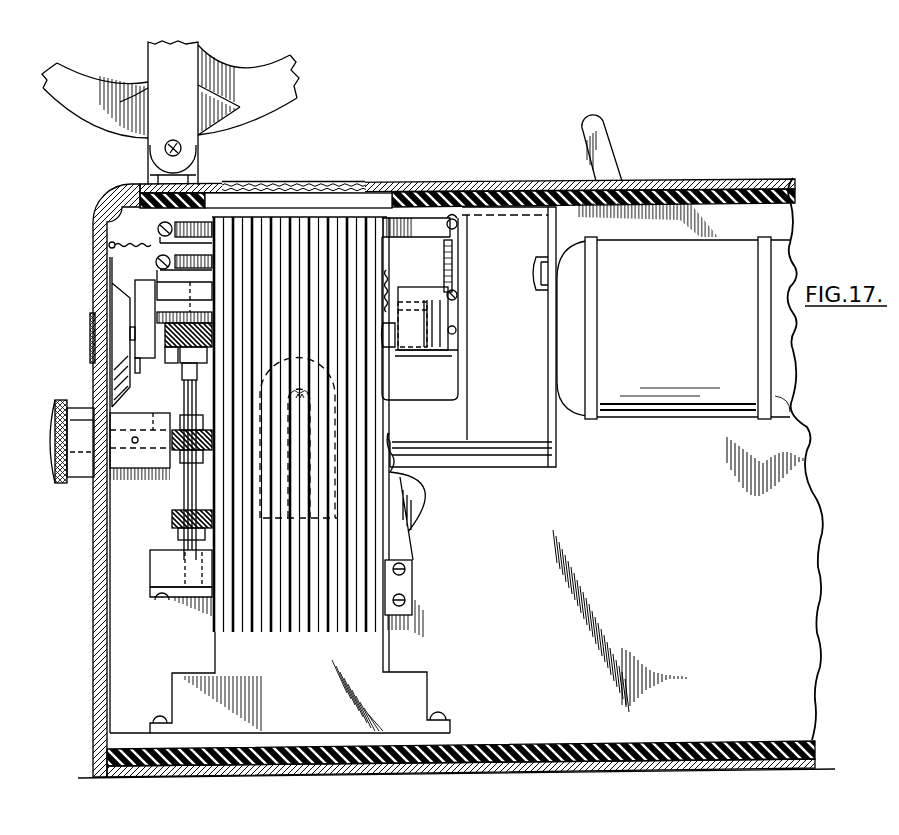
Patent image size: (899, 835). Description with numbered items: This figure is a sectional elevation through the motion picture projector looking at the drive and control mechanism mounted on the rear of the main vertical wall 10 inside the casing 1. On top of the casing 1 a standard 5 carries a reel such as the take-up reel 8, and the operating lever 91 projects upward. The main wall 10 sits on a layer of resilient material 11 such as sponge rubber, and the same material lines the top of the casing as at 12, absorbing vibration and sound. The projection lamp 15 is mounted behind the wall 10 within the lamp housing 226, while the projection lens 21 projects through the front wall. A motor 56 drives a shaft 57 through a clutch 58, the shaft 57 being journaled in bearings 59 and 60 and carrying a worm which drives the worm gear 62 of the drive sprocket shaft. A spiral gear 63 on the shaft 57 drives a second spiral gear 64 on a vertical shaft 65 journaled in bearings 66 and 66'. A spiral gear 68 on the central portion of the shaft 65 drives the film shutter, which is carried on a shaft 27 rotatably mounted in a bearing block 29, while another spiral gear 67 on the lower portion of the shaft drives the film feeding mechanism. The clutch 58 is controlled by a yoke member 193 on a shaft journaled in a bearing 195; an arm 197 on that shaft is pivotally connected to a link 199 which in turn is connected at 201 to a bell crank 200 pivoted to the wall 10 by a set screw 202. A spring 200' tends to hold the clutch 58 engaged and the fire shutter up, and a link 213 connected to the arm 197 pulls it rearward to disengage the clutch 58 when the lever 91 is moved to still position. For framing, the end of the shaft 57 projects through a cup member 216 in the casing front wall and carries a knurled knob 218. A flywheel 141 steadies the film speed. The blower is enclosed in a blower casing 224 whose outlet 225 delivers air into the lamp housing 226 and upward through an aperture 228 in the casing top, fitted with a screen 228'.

The casing 1 is at (92, 282).
The standard 5 is at (157, 146).
The take-up reel 8 is at (283, 100).
The main vertical wall 10 is at (502, 549).
The layer of resilient material 11 is at (532, 763).
The resilient lining 12 is at (735, 179).
The projection lamp 15 is at (337, 413).
The projection lens 21 is at (80, 405).
The shaft 27 is at (155, 413).
The bearing block 29 is at (135, 434).
The motor 56 is at (688, 335).
The shaft 57 is at (139, 372).
The clutch 58 is at (450, 351).
The bearing 59 is at (153, 319).
The bearing 60 is at (420, 343).
The worm gear 62 is at (388, 281).
The spiral gear 63 is at (172, 362).
The spiral gear 64 is at (187, 372).
The vertical shaft 65 is at (186, 485).
The bearing 66 is at (184, 329).
The bearing 66' is at (181, 575).
The spiral gear 67 is at (172, 519).
The spiral gear 68 is at (179, 442).
The operating lever 91 is at (609, 134).
The flywheel 141 is at (430, 497).
The yoke member 193 is at (456, 329).
The bearing 195 is at (440, 297).
The arm 197 is at (450, 250).
The link 199 is at (197, 232).
The bell crank 200 is at (167, 259).
The spring 200' is at (131, 236).
The pivot connection 201 is at (158, 228).
The set screw 202 is at (184, 297).
The link 213 is at (454, 219).
The cup member 216 is at (116, 297).
The knurled knob 218 is at (90, 340).
The blower casing 224 is at (524, 390).
The outlet 225 is at (440, 409).
The projection lamp housing 226 is at (373, 657).
The aperture 228 is at (298, 173).
The screen 228' is at (294, 174).